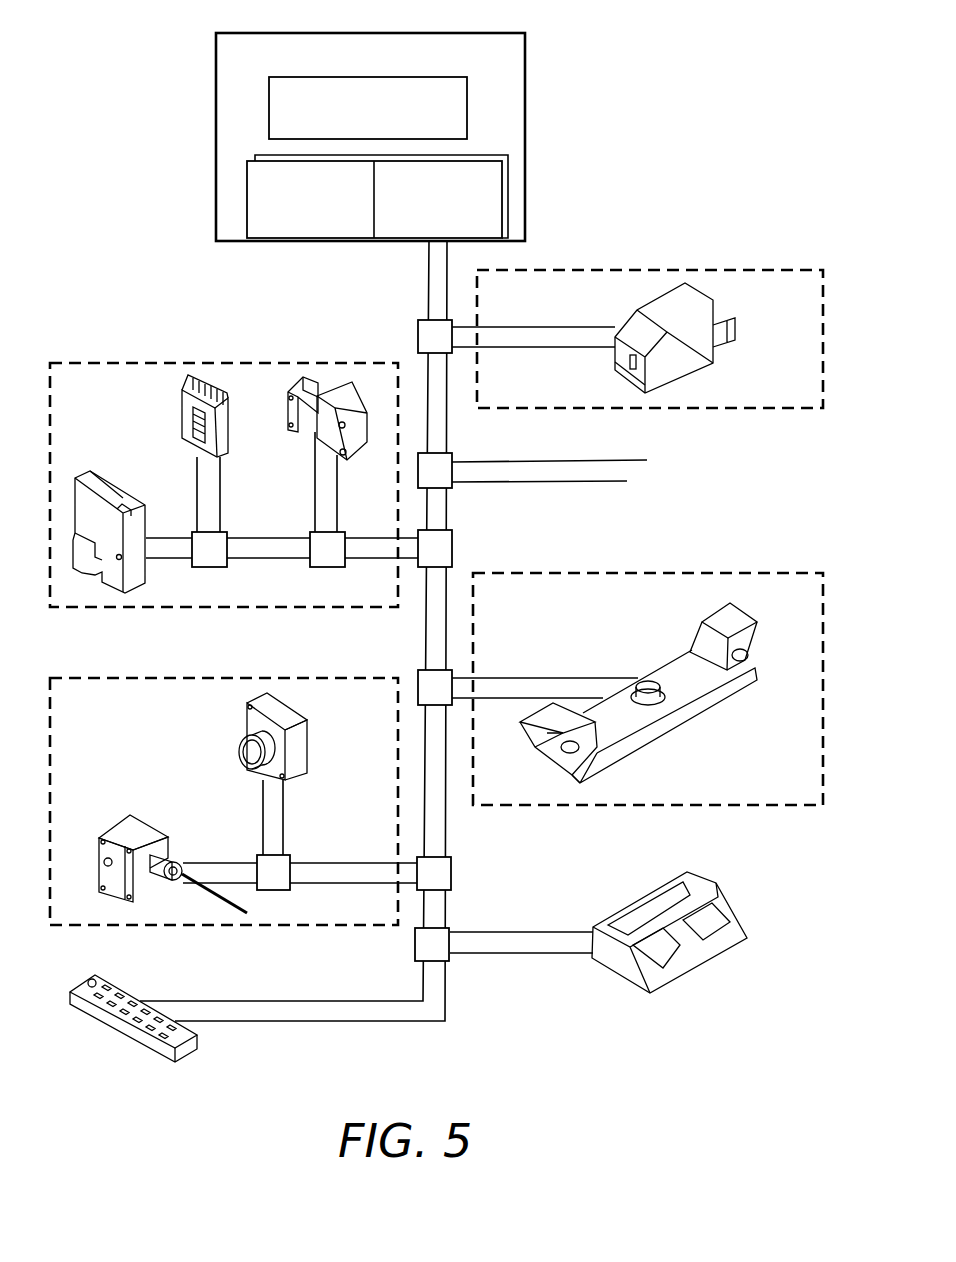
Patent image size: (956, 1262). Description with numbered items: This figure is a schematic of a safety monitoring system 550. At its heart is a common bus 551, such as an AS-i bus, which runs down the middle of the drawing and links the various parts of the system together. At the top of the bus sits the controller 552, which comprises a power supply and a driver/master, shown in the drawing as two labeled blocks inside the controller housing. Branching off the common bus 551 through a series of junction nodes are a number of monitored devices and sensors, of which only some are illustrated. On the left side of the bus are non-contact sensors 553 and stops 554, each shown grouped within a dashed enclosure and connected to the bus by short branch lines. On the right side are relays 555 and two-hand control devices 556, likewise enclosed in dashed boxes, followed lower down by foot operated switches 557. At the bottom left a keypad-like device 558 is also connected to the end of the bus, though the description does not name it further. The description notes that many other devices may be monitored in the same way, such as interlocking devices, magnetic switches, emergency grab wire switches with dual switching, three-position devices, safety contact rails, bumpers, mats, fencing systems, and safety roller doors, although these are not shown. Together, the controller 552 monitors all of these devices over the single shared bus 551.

The safety monitoring system 550 is at (181, 231).
The common bus 551 is at (429, 288).
The controller 552 is at (525, 118).
The non-contact sensors 553 is at (150, 363).
The stops 554 is at (137, 678).
The relays 555 is at (781, 270).
The two-hand control devices 556 is at (730, 573).
The foot operated switches 557 is at (628, 905).
The keypad 558 is at (128, 1035).